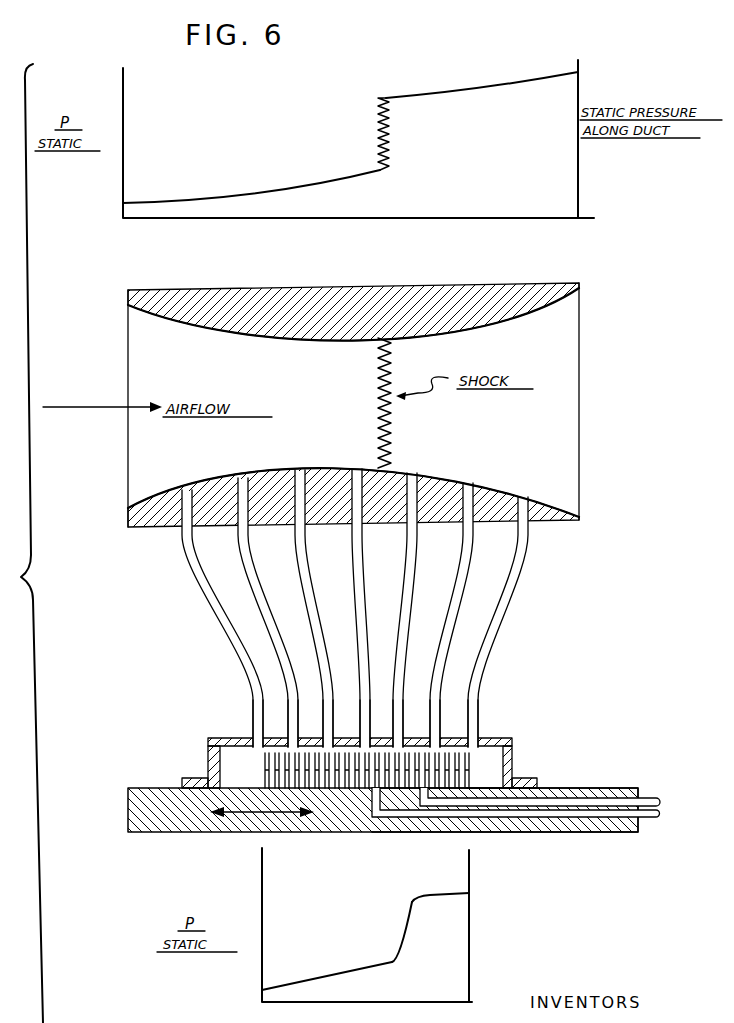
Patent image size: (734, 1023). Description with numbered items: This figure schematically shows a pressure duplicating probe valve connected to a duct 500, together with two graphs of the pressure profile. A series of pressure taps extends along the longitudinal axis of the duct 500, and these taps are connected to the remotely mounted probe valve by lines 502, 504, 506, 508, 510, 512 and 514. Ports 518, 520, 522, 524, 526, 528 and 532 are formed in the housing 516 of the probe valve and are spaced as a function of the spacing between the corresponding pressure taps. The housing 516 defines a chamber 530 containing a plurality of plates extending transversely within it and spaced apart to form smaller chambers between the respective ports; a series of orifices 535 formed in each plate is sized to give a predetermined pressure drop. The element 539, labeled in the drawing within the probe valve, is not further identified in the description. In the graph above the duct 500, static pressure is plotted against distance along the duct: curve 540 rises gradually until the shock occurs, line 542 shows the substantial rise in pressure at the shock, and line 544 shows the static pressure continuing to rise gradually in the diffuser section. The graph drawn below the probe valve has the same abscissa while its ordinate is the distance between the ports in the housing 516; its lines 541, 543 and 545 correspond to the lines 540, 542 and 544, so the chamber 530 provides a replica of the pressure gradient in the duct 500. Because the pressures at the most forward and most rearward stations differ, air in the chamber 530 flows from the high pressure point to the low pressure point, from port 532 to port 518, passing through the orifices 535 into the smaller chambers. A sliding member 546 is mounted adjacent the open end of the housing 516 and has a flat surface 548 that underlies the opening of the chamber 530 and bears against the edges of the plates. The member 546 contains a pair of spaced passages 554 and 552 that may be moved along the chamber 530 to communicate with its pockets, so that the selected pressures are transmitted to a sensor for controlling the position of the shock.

The duct 500 is at (145, 290).
The line 502 is at (202, 567).
The line 504 is at (244, 553).
The line 506 is at (300, 543).
The line 508 is at (355, 541).
The line 510 is at (408, 541).
The line 512 is at (464, 541).
The line 514 is at (519, 541).
The housing 516 is at (513, 745).
The port 518 is at (255, 742).
The port 520 is at (292, 742).
The port 522 is at (327, 742).
The port 524 is at (362, 742).
The port 526 is at (398, 742).
The port 528 is at (435, 742).
The port 532 is at (470, 742).
The chamber 530 is at (508, 765).
The orifices 535 is at (462, 782).
The chamber with ports 539 is at (265, 783).
The curve 540 is at (257, 188).
The line 541 is at (322, 976).
The line 542 is at (389, 136).
The line 543 is at (403, 932).
The line 544 is at (488, 88).
The line 545 is at (413, 900).
The sliding member 546 is at (165, 833).
The flat surface 548 is at (578, 788).
The passage 552 is at (617, 800).
The passage 554 is at (613, 818).